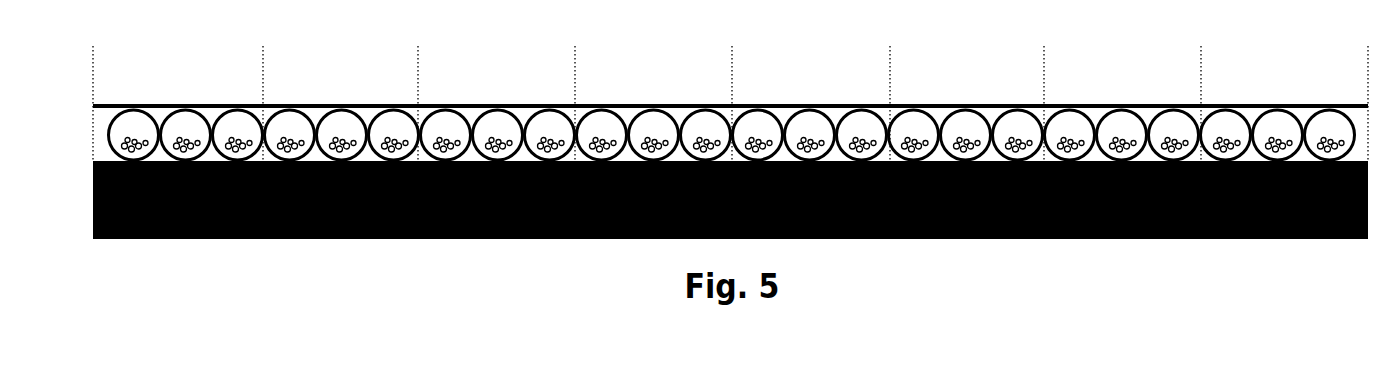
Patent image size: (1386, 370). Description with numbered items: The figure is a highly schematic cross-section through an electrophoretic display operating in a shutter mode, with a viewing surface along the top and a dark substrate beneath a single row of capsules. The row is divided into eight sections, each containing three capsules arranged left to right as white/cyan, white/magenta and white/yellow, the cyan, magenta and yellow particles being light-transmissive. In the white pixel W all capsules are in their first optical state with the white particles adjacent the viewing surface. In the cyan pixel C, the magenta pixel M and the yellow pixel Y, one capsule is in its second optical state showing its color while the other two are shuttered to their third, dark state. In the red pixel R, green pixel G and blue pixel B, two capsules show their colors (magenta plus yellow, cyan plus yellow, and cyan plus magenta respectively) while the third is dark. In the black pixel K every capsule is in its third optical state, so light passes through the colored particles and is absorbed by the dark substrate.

The white pixel W is at (178, 103).
The cyan pixel C is at (341, 103).
The magenta pixel M is at (496, 103).
The yellow pixel Y is at (653, 103).
The red pixel R is at (809, 103).
The green pixel G is at (966, 103).
The blue pixel B is at (1121, 103).
The black pixel K is at (1285, 103).